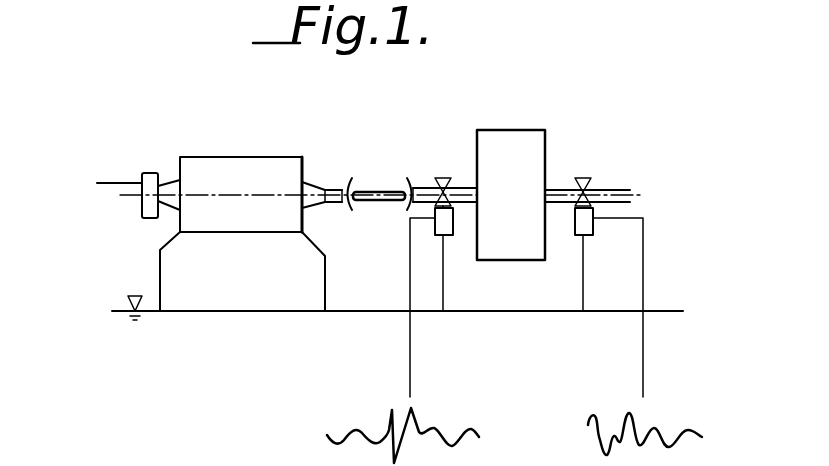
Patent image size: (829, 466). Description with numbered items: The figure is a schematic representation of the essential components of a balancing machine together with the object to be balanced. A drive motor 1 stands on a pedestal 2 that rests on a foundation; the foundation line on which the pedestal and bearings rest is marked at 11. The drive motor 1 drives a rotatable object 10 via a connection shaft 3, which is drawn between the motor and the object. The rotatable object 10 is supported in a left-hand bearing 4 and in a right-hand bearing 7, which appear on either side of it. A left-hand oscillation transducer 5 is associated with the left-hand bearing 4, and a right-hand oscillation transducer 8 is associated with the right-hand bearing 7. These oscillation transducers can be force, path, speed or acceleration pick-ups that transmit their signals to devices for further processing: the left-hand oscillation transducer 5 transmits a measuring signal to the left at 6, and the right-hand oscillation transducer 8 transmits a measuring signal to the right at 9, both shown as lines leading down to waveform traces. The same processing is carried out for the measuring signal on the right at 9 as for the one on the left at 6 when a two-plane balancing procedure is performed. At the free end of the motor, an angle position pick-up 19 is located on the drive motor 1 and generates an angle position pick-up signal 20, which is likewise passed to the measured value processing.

The drive motor 1 is at (221, 170).
The pedestal 2 is at (180, 274).
The connection shaft 3 is at (377, 192).
The left-hand bearing 4 is at (443, 178).
The left-hand oscillation transducer 5 is at (441, 214).
The measuring signal on the left 6 is at (412, 352).
The right-hand bearing 7 is at (585, 180).
The right-hand oscillation transducer 8 is at (587, 213).
The measuring signal on the right 9 is at (645, 252).
The rotatable object 10 is at (517, 155).
The base plate / ground 11 is at (343, 313).
The angle position pick-up 19 is at (150, 178).
The angle position pick-up signal 20 is at (110, 183).